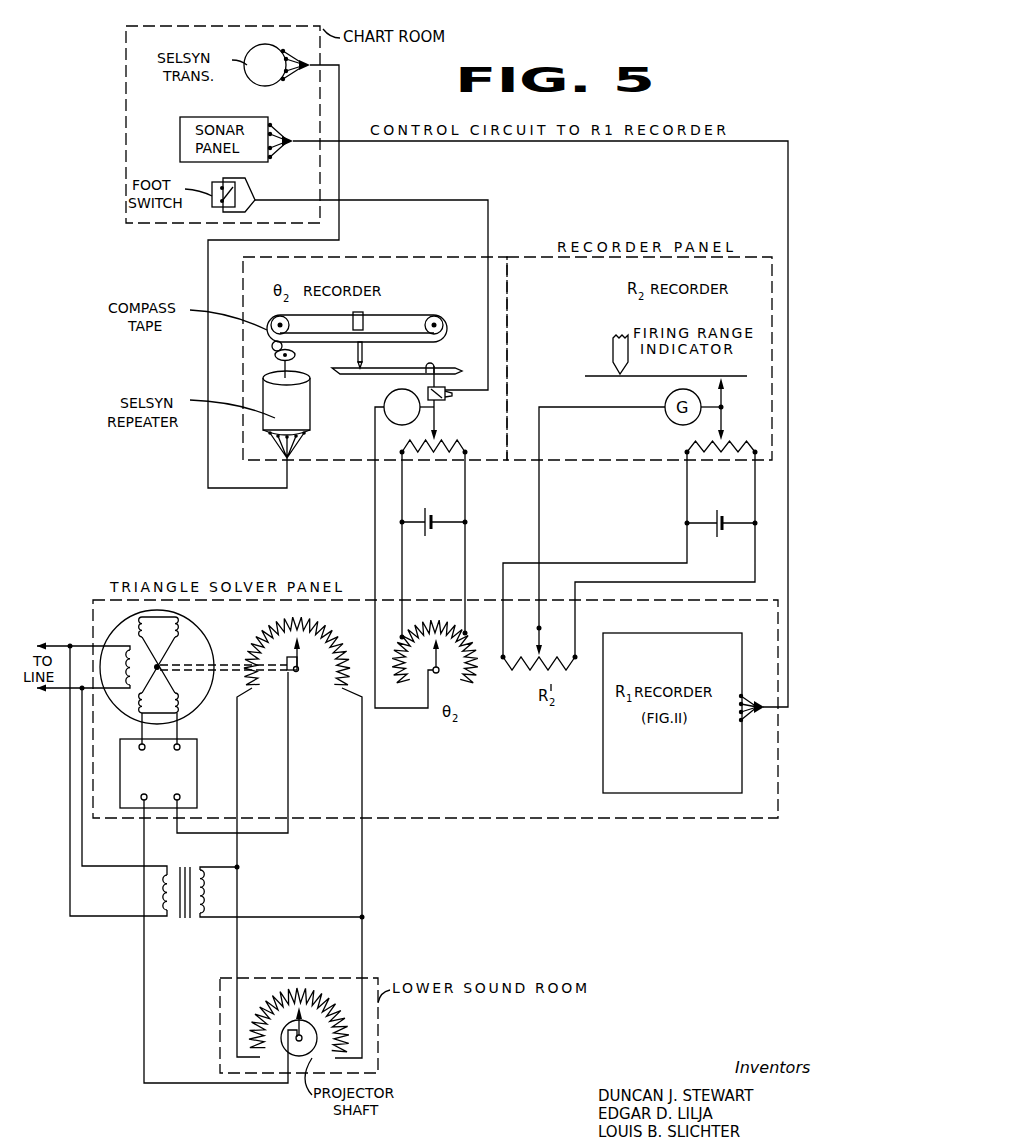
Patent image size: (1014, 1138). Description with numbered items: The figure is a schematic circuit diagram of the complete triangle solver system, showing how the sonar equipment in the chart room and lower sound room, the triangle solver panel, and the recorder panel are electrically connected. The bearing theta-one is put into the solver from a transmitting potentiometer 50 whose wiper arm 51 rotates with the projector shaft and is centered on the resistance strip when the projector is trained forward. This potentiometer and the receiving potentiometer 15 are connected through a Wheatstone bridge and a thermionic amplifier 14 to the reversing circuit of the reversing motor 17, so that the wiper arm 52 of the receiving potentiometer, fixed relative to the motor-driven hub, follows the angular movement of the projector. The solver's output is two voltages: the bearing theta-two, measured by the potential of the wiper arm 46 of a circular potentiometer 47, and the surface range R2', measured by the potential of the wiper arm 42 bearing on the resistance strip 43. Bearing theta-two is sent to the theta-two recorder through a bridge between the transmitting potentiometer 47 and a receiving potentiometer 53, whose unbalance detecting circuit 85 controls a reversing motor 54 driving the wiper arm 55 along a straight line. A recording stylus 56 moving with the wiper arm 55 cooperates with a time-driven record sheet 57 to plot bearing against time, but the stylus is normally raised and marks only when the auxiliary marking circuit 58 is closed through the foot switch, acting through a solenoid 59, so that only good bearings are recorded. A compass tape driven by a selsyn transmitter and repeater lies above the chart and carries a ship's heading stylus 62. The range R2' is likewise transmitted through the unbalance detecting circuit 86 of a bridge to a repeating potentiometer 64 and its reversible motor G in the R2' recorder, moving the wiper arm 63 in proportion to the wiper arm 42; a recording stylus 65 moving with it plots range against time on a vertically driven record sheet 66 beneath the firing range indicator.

The thermionic amplifier 14 is at (193, 765).
The receiving potentiometer 15 is at (322, 628).
The reversing motor 17 is at (203, 641).
The wiper arm 42 is at (536, 641).
The resistance strip 43 is at (528, 675).
The wiper arm 46 is at (439, 649).
The circular potentiometer 47 is at (428, 622).
The transmitting potentiometer 50 is at (320, 1003).
The wiper arm 51 is at (320, 1036).
The wiper arm 52 is at (300, 657).
The receiving potentiometer 53 is at (441, 457).
The reversing motor 54 is at (393, 414).
The wiper arm 55 is at (438, 418).
The recording stylus 56 is at (446, 382).
The record sheet 57 is at (385, 376).
The auxiliary marking circuit 58 is at (488, 222).
The solenoid 59 is at (447, 402).
The ship's heading stylus 62 is at (364, 367).
The wiper arm 63 is at (725, 426).
The repeating potentiometer 64 is at (695, 448).
The recording stylus 65 is at (725, 397).
The record sheet 66 is at (655, 378).
The unbalance detecting circuit 85 is at (375, 543).
The unbalance detecting circuit 86 is at (540, 508).